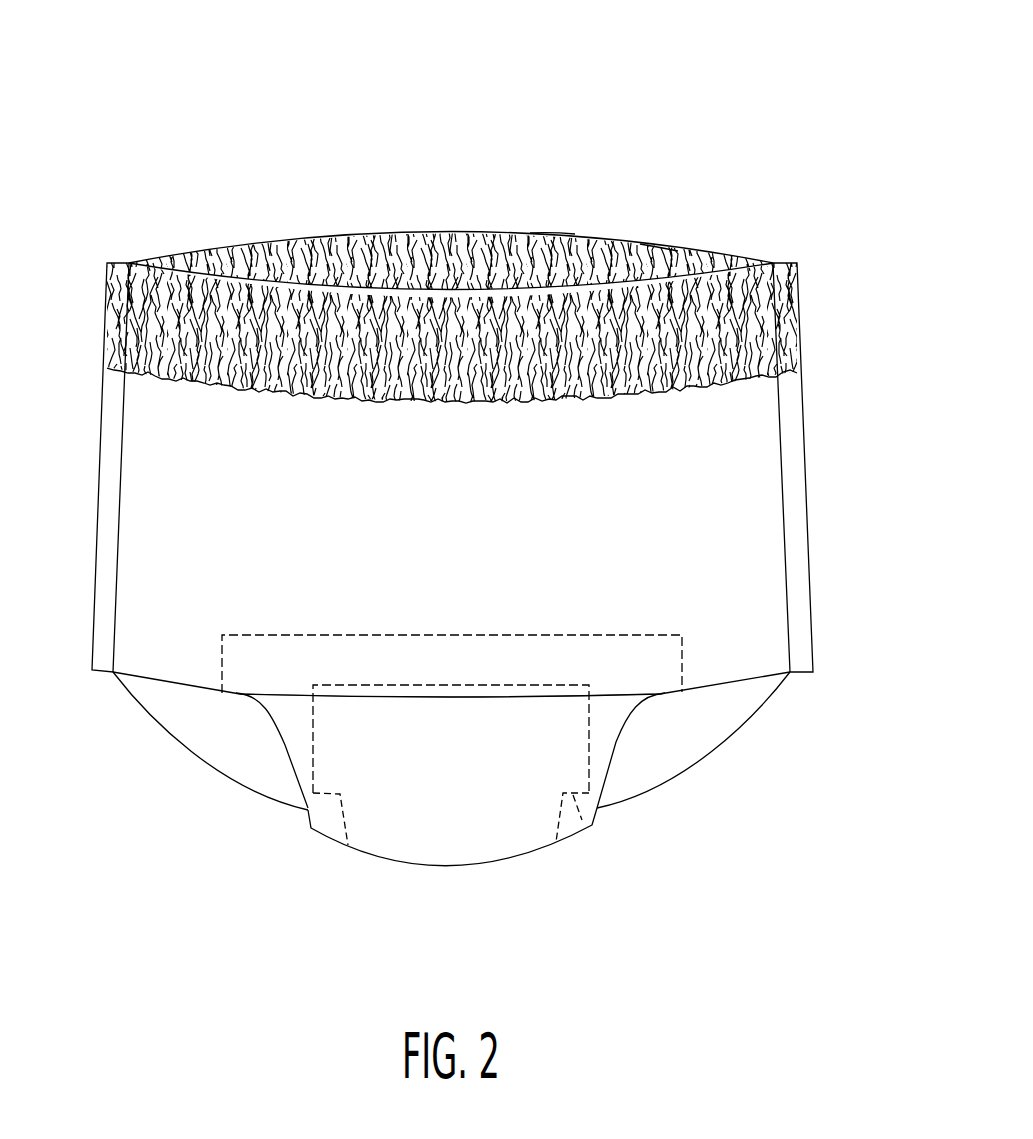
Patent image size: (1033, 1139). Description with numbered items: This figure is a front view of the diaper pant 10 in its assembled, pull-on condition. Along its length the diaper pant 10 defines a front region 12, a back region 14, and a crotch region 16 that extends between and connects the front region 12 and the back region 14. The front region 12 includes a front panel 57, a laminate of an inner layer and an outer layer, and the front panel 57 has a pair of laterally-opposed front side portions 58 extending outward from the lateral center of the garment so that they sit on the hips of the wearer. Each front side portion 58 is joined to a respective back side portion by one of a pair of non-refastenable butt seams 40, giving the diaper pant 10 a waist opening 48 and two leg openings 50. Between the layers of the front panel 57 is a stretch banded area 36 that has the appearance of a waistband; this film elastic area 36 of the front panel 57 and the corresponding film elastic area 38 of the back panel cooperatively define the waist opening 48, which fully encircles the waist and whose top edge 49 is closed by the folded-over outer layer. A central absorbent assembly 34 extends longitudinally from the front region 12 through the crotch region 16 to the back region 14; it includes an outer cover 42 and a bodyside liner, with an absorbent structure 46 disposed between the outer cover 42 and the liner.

The diaper pant 10 is at (752, 115).
The front region 12 is at (342, 302).
The back region 14 is at (443, 250).
The crotch region 16 is at (387, 872).
The central absorbent assembly 34 is at (517, 818).
The stretch banded area 36 is at (580, 290).
The stretch banded area 38 is at (393, 237).
The non-refastenable butt seams 40 is at (112, 307).
The outer cover 42 is at (306, 817).
The absorbent structure 46 is at (598, 838).
The waist opening 48 is at (553, 229).
The top edge 49 is at (658, 247).
The leg openings 50 is at (210, 772).
The front panel 57 is at (465, 507).
The front side portions 58 is at (762, 655).